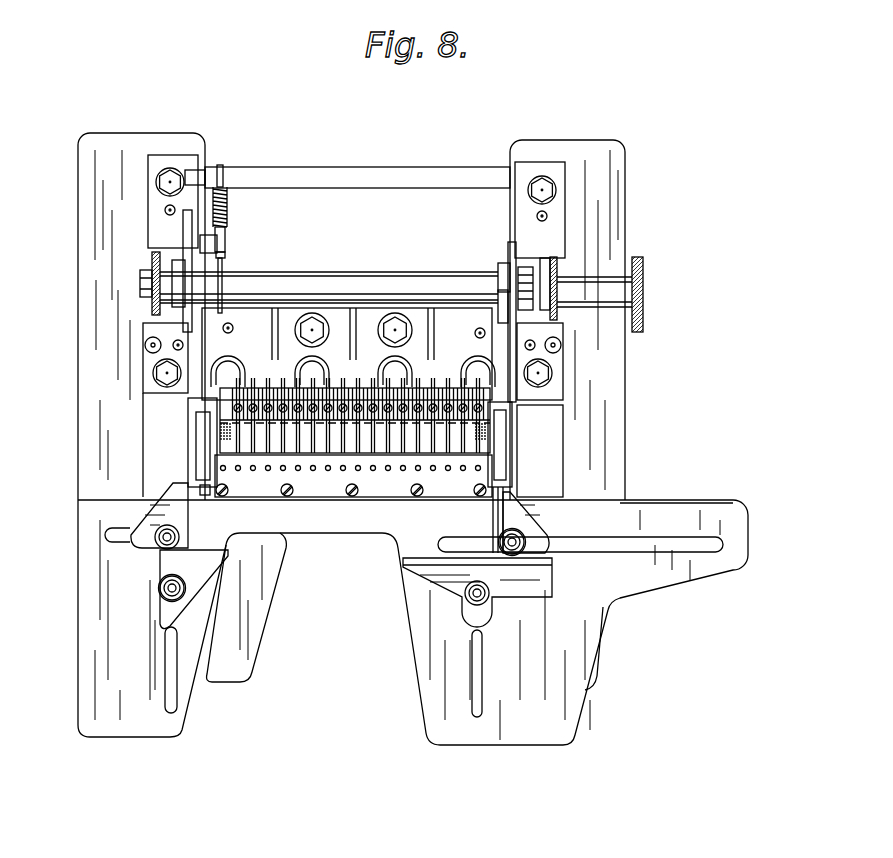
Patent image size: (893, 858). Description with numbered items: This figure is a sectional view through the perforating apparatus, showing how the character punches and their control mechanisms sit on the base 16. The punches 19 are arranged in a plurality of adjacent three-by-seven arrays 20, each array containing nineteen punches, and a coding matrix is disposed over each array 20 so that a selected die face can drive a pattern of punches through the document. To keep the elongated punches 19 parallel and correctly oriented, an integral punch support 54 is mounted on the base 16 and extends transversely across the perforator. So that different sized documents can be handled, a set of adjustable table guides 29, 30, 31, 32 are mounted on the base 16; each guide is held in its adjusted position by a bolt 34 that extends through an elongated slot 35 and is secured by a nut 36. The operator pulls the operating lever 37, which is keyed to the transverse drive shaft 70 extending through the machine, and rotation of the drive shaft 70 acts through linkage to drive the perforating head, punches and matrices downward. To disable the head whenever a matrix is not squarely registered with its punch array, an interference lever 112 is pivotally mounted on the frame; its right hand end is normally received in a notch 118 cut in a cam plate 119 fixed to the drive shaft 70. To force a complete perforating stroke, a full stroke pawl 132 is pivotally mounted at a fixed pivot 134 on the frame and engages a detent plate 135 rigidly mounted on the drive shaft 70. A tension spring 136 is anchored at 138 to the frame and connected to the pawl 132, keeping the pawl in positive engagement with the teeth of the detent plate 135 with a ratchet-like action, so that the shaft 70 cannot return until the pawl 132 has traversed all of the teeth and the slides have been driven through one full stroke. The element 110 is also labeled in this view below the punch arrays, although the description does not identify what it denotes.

The base 16 is at (78, 563).
The punches 19 is at (217, 432).
The arrays 20 is at (220, 453).
The adjustable table guide 29 is at (150, 517).
The adjustable table guide 30 is at (518, 508).
The adjustable table guide 31 is at (445, 588).
The adjustable table guide 32 is at (187, 603).
The bolt 34 is at (165, 582).
The elongated slot 35 is at (108, 533).
The nut 36 is at (175, 548).
The operating lever 37 is at (643, 283).
The punch support 54 is at (503, 465).
The drive shaft 70 is at (607, 283).
The lower plate with holes 110 is at (448, 470).
The interference lever 112 is at (503, 342).
The notch 118 is at (457, 300).
The cam plate 119 is at (503, 265).
The full stroke pawl 132 is at (226, 242).
The pivot 134 is at (212, 248).
The detent plate 135 is at (252, 298).
The tension spring 136 is at (227, 192).
The anchor 138 is at (381, 172).